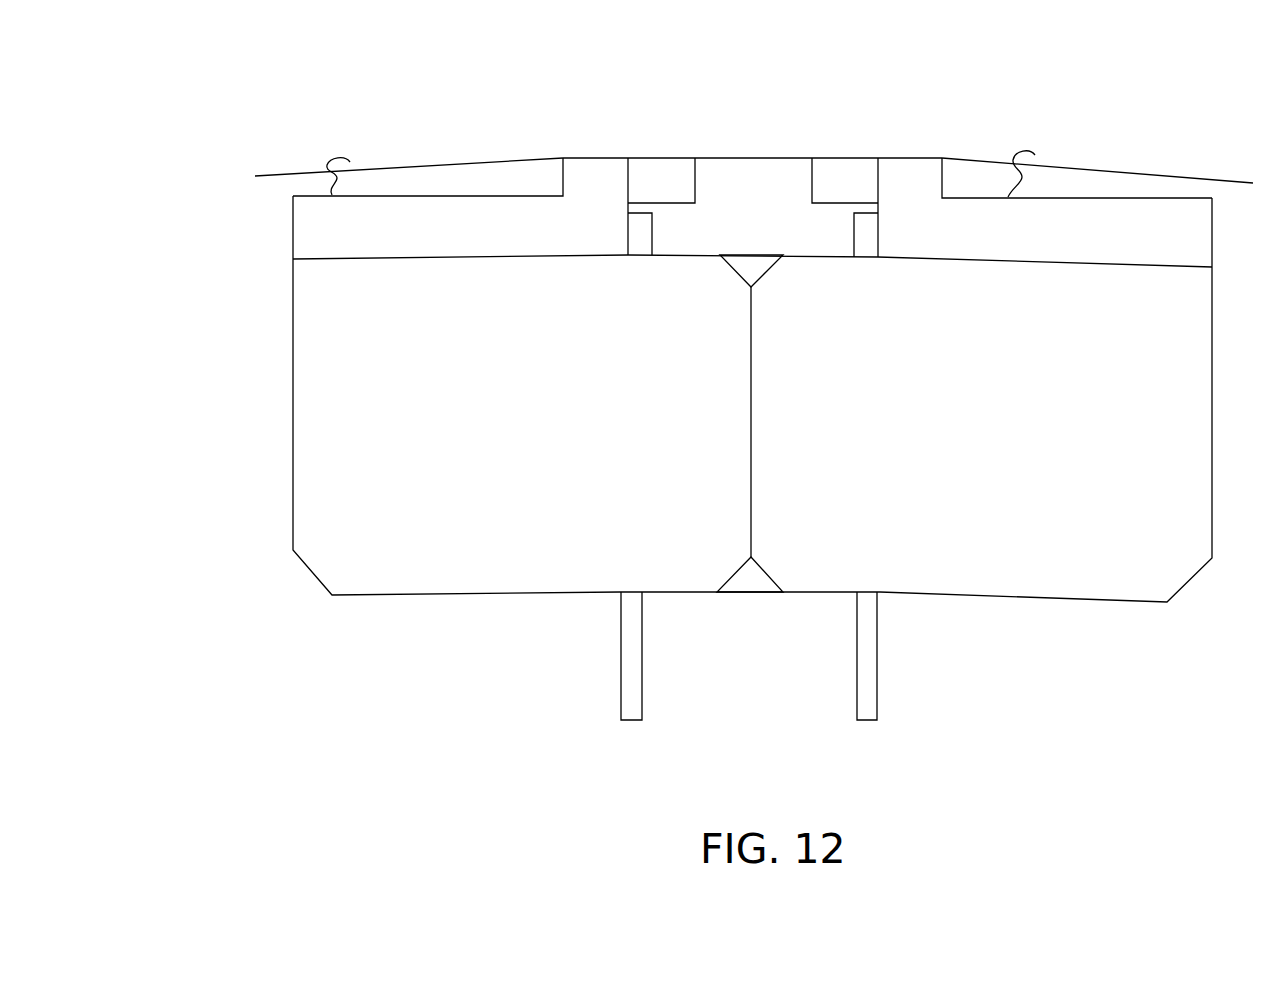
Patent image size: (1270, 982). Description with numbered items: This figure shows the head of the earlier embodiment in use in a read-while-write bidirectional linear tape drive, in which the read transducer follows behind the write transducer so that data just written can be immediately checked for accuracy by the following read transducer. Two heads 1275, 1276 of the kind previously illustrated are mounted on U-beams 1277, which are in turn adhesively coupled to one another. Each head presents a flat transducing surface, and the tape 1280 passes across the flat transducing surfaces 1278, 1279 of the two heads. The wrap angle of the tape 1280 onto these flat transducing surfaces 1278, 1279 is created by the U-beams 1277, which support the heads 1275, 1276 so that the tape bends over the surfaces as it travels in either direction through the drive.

The head 1275 is at (350, 162).
The head 1276 is at (1035, 155).
The U-beams 1277 is at (272, 385).
The flat transducing surface 1278 is at (586, 158).
The flat transducing surface 1279 is at (893, 158).
The tape 1280 is at (267, 176).